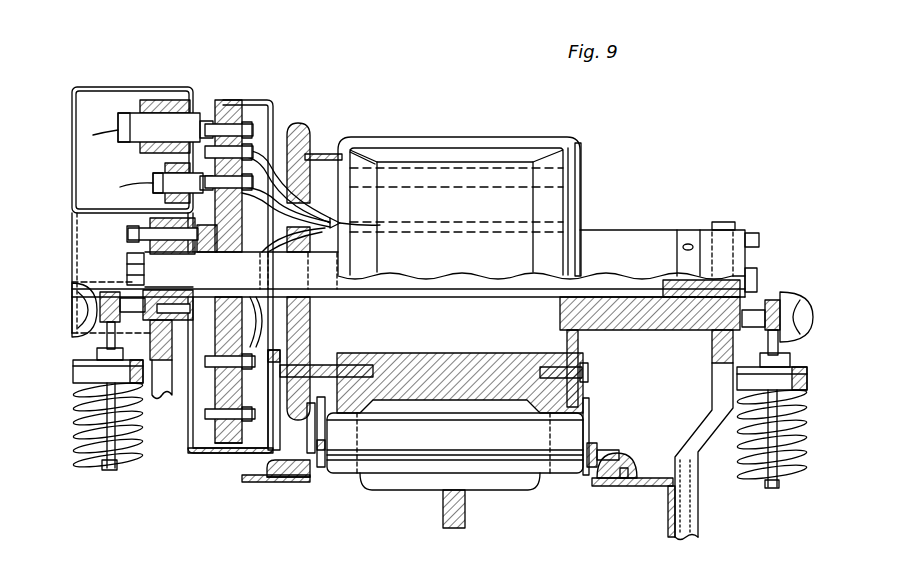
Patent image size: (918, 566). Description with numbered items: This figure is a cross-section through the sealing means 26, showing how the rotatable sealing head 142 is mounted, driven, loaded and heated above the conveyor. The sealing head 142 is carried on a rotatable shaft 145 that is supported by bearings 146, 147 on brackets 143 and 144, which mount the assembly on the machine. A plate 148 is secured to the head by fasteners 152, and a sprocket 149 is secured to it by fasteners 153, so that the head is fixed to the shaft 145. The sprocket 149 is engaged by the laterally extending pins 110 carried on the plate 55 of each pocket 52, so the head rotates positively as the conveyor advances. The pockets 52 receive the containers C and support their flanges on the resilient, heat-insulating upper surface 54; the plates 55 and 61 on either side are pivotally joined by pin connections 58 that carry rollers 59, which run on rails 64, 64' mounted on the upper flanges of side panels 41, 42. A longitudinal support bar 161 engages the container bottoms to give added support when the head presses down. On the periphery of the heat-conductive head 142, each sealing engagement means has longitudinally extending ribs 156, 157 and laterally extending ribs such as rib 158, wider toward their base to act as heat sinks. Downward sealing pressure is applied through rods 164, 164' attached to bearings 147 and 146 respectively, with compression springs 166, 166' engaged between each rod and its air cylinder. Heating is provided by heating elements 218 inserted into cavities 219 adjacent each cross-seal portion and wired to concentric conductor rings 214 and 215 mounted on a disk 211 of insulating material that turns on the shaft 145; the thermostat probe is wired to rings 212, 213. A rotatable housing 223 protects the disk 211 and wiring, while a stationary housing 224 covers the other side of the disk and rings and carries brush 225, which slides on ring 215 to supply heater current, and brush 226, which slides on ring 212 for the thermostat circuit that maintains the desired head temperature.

The stationary housing 224 is at (73, 163).
The brush 225 is at (213, 120).
The brush 226 is at (166, 166).
The disk 211 is at (238, 98).
The rotatable housing 223 is at (260, 98).
The sprocket 149 is at (298, 124).
The heating element 218 is at (325, 153).
The longitudinal rib 157 is at (352, 160).
The cavity 219 is at (398, 168).
The lateral rib 158 is at (470, 137).
The sealing head 142 is at (584, 150).
The sealing means 26 is at (624, 153).
The plate 148 is at (582, 185).
The longitudinal rib 156 is at (569, 210).
The bearing 146 is at (725, 238).
The rotatable shaft 145 is at (615, 287).
The bearing 147 is at (142, 242).
The conductor ring 212 is at (213, 357).
The conductor ring 213 is at (217, 370).
The bracket 144 is at (163, 386).
The conductor ring 214 is at (213, 396).
The conductor ring 215 is at (212, 428).
The pin 110 is at (278, 412).
The fastener 153 is at (326, 355).
The fastener 152 is at (584, 370).
The upper surface 54 is at (587, 414).
The plate 61 is at (594, 445).
The roller 59 is at (615, 450).
The pin connection 58 is at (630, 455).
The compression spring 166 is at (82, 416).
The rod 164 is at (75, 443).
The side panel 42 is at (243, 479).
The rail 64' is at (263, 500).
The plate 55 is at (312, 478).
The container C is at (390, 492).
The longitudinal support bar 161 is at (466, 507).
The pocket 52 is at (567, 447).
The rail 64 is at (619, 494).
The side panel 41 is at (667, 521).
The bracket 143 is at (695, 513).
The compression spring 166' is at (789, 394).
The rod 164' is at (795, 458).